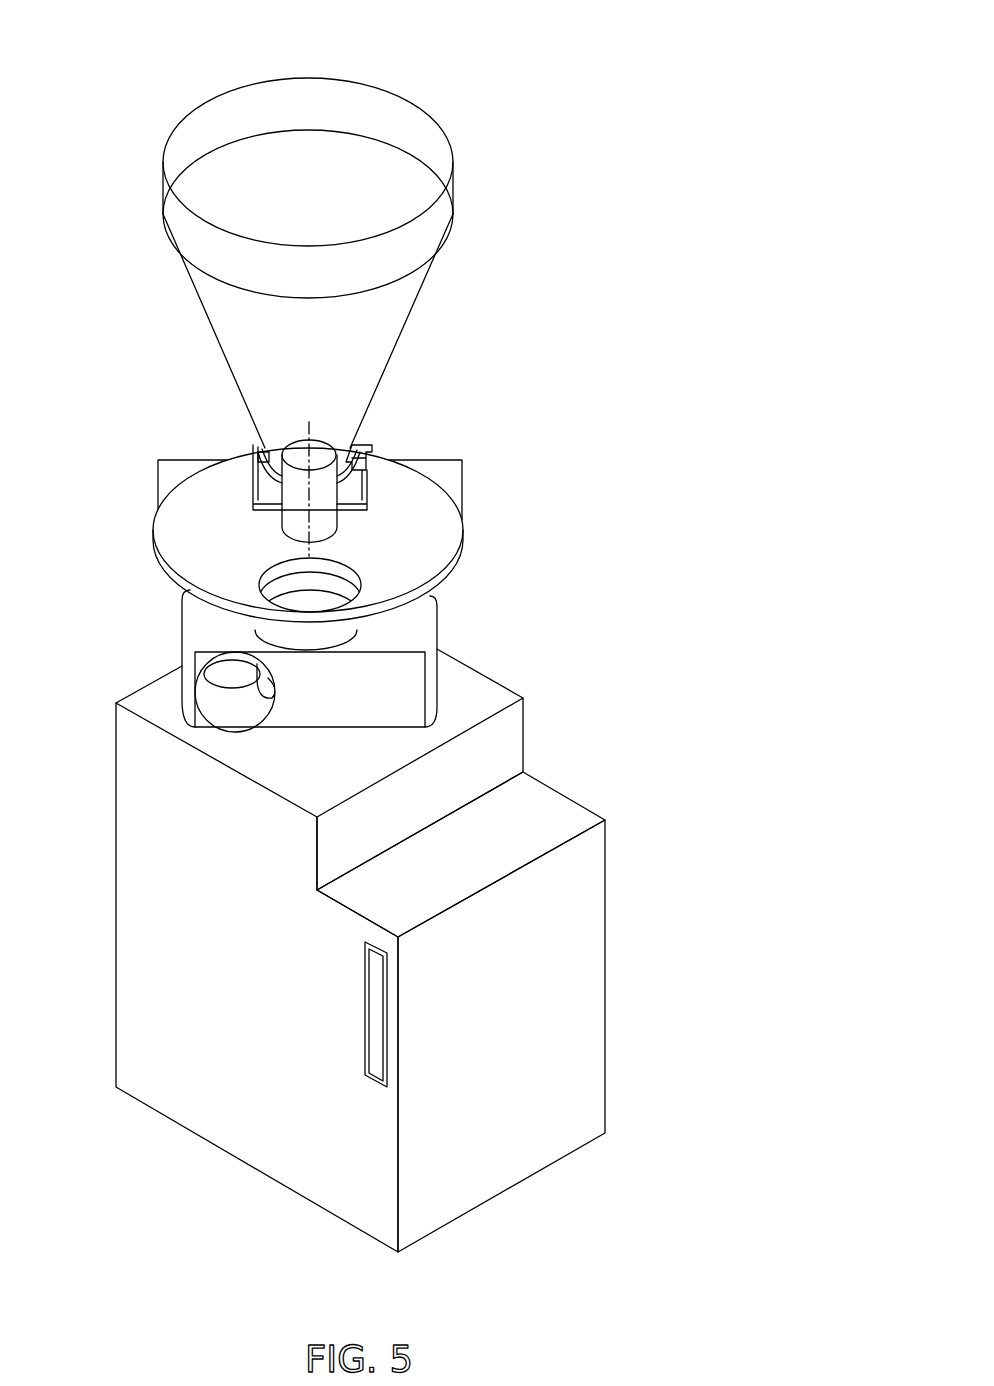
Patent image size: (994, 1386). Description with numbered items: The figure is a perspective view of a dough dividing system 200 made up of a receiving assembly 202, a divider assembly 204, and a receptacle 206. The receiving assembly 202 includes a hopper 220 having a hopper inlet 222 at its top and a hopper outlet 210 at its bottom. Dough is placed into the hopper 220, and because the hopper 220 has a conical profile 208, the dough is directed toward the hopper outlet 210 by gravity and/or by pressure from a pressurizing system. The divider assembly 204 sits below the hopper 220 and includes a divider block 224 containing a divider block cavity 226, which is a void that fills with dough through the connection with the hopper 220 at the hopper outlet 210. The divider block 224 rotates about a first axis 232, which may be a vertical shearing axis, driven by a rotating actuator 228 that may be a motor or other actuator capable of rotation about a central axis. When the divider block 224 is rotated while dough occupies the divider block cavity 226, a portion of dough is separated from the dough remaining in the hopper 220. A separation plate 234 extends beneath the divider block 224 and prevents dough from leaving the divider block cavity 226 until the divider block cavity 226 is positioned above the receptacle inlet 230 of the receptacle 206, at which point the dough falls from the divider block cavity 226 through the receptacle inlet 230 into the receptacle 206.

The dough dividing system 200 is at (689, 126).
The receiving assembly 202 is at (460, 281).
The conical profile 208 is at (428, 88).
The hopper inlet 222 is at (246, 146).
The hopper 220 is at (200, 291).
The divider assembly 204 is at (552, 532).
The hopper outlet 210 is at (250, 438).
The first axis 232 is at (311, 430).
The rotating actuator 228 is at (330, 520).
The separation plate 234 is at (173, 472).
The divider block 224 is at (448, 542).
The divider block cavity 226 is at (305, 568).
The receptacle inlet 230 is at (313, 646).
The receptacle 206 is at (584, 705).